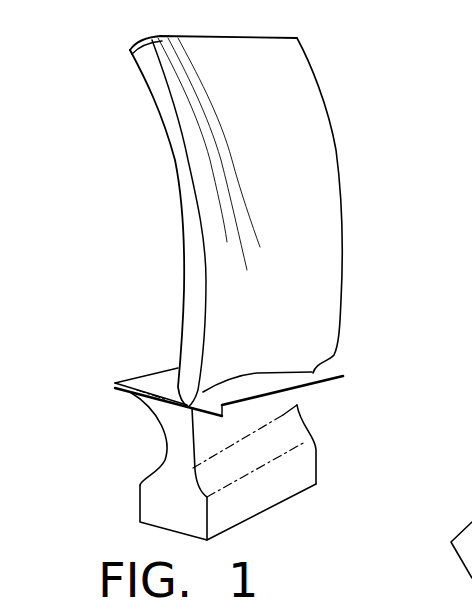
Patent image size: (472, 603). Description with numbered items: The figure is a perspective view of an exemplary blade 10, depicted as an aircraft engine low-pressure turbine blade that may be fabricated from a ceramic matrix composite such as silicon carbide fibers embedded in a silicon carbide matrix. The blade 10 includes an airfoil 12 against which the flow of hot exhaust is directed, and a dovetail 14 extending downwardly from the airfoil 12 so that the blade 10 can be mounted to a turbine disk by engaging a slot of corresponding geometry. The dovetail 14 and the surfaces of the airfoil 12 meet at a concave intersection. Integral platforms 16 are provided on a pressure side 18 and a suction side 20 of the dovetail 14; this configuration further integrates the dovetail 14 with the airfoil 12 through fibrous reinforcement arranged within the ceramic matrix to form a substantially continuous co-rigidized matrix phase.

The blade 10 is at (360, 118).
The airfoil 12 is at (153, 34).
The dovetail 14 is at (140, 503).
The integral platform 16 is at (98, 392).
The pressure side 18 is at (300, 164).
The suction side 20 is at (183, 208).